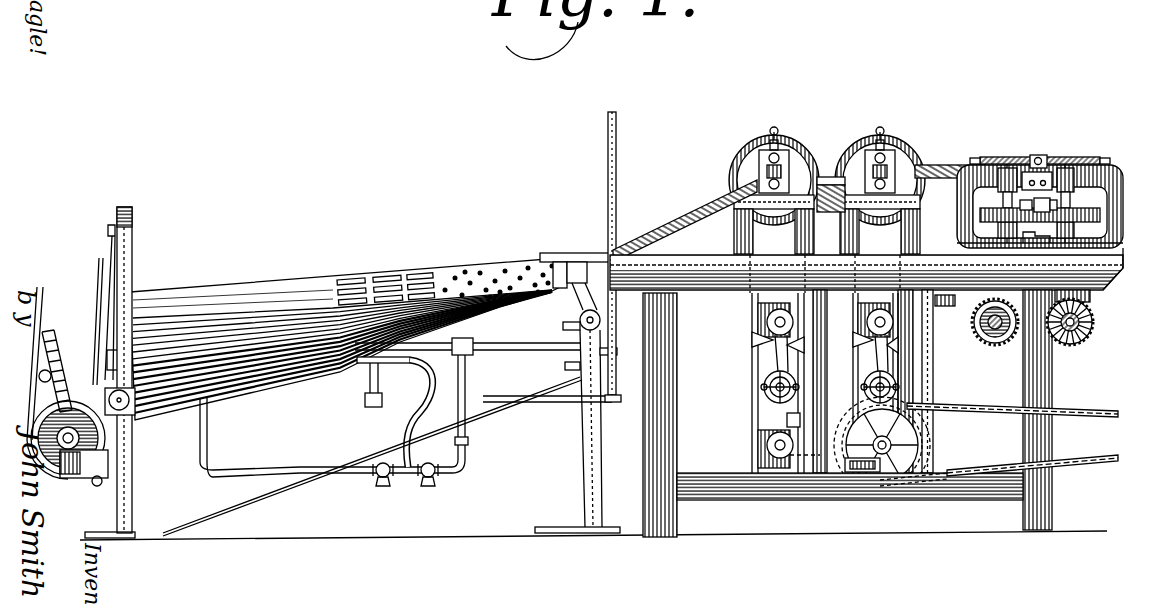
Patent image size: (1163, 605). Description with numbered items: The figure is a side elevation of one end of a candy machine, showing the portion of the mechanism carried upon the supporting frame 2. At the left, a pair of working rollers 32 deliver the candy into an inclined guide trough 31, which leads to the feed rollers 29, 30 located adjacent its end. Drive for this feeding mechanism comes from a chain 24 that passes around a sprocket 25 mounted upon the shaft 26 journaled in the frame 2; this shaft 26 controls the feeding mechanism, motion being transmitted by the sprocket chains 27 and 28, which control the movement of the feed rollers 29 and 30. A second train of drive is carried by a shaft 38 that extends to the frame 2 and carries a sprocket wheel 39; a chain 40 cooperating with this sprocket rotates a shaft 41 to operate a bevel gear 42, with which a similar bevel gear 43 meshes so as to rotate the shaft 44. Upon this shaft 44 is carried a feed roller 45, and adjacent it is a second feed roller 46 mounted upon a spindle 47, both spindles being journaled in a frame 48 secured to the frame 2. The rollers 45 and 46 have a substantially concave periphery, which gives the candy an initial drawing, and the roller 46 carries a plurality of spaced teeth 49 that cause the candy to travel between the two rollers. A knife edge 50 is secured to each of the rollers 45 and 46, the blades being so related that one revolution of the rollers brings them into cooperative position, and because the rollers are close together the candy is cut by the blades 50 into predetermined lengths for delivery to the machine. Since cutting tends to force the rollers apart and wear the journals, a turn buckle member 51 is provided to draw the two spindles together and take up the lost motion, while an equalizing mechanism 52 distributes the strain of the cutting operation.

The supporting frame 2 is at (653, 380).
The chain 24 is at (963, 398).
The sprocket 25 is at (862, 470).
The shaft 26 is at (887, 468).
The sprocket chain 27 is at (877, 370).
The sprocket chain 28 is at (762, 408).
The feed roller 29 is at (792, 150).
The feed roller 30 is at (895, 150).
The guide trough 31 is at (647, 240).
The working rollers 32 is at (478, 270).
The shaft 38 is at (978, 340).
The sprocket wheel 39 is at (980, 302).
The chain 40 is at (1005, 342).
The shaft 41 is at (1084, 318).
The bevel gear 42 is at (1079, 338).
The bevel gear 43 is at (1088, 303).
The shaft 44 is at (1072, 186).
The feed roller 45 is at (1078, 157).
The second feed roller 46 is at (992, 157).
The spindle 47 is at (1002, 197).
The frame 48 is at (1106, 226).
The spaced teeth 49 is at (1016, 157).
The knife edge 50 is at (976, 152).
The turn buckle member 51 is at (1040, 192).
The equalizing mechanism 52 is at (1098, 215).